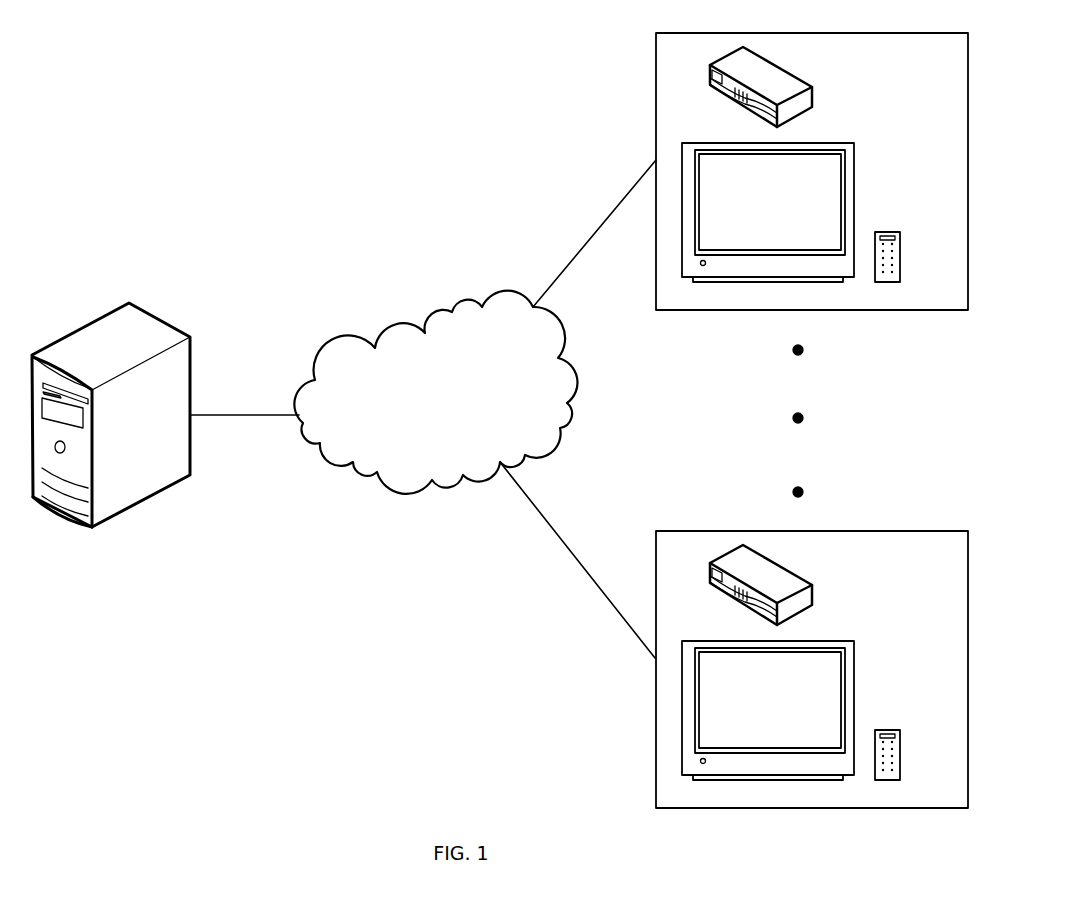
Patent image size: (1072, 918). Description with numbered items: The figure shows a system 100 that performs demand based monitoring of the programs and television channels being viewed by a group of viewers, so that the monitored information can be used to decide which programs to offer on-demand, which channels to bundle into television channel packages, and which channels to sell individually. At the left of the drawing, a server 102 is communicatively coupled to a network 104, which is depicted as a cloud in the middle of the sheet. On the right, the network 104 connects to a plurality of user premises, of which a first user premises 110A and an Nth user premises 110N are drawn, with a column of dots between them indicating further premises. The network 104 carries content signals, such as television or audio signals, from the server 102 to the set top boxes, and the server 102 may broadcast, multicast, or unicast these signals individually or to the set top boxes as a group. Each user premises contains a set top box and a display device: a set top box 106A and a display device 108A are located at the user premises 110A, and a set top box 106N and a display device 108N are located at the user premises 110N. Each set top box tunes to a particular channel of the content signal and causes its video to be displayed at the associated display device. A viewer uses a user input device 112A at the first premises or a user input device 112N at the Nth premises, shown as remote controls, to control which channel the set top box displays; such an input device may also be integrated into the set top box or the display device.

The system 100 is at (455, 44).
The server 102 is at (202, 352).
The network 104 is at (421, 412).
The set top box 106A is at (822, 95).
The set top box 106N is at (791, 585).
The display device 108A is at (862, 189).
The display device 108N is at (800, 710).
The user premises 110A is at (988, 72).
The user premises 110N is at (848, 667).
The user input device 112A is at (905, 258).
The user input device 112N is at (917, 745).